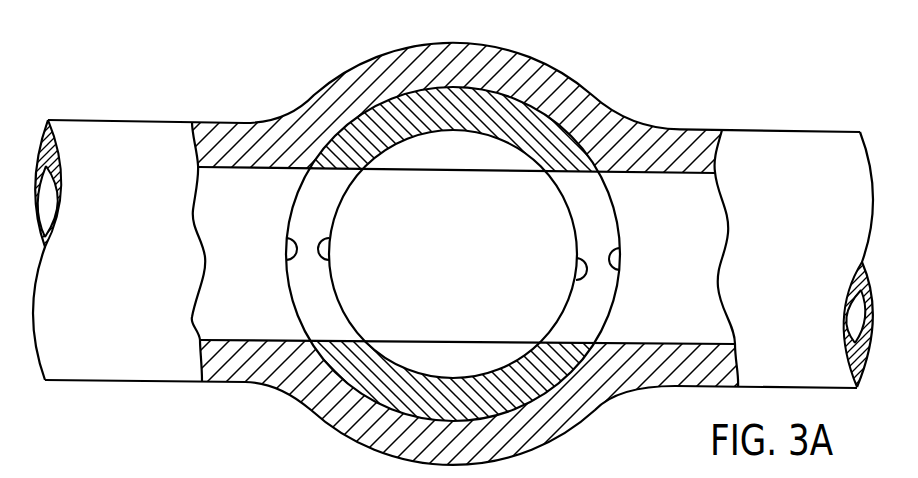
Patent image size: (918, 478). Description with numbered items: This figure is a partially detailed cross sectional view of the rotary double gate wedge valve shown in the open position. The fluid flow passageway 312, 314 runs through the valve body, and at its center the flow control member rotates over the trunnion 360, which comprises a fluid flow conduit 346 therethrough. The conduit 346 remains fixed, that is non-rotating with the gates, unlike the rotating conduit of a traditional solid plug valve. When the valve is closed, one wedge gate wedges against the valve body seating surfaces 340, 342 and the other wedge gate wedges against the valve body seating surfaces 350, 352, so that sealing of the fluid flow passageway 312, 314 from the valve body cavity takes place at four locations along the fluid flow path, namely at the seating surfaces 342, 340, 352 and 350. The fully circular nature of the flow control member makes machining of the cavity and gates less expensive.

The fluid flow passageway 312 is at (708, 258).
The fluid flow passageway 314 is at (241, 256).
The valve body seating surface 340 is at (330, 268).
The valve body seating surface 342 is at (286, 265).
The fluid flow conduit 346 is at (481, 252).
The valve body seating surface 350 is at (620, 269).
The valve body seating surface 352 is at (577, 280).
The trunnion 360 is at (503, 153).